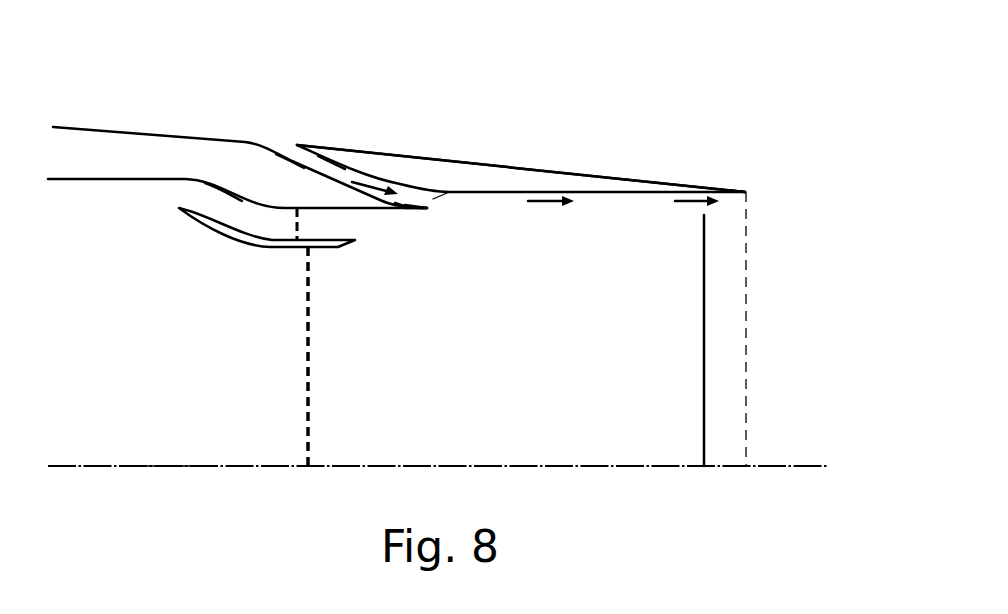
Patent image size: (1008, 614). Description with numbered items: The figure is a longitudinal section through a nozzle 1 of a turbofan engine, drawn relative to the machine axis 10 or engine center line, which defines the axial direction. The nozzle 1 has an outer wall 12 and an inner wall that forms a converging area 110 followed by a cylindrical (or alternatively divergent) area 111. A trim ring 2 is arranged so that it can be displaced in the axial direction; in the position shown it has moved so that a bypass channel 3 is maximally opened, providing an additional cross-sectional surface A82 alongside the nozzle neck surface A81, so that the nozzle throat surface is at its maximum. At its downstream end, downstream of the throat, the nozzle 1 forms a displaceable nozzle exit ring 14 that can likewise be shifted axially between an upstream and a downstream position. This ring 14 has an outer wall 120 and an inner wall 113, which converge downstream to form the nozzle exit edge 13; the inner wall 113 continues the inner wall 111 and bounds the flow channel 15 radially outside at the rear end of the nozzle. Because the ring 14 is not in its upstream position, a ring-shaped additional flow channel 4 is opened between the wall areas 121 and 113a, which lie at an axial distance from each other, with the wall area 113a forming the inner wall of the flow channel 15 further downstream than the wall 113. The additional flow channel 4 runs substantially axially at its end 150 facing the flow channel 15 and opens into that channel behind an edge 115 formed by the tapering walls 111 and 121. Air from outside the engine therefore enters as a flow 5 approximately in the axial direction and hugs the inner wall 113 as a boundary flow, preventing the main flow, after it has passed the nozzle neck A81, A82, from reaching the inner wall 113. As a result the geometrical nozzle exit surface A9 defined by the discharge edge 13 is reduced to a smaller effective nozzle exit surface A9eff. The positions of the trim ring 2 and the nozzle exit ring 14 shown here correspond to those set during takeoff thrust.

The nozzle 1 is at (583, 52).
The trim ring 2 is at (275, 248).
The bypass channel 3 is at (229, 215).
The additional flow channel 4 is at (335, 177).
The flow 5 is at (552, 204).
The machine axis 10 is at (800, 465).
The outer wall 12 is at (97, 126).
The nozzle exit edge 13 is at (745, 191).
The nozzle exit ring 14 is at (392, 170).
The flow channel 15 is at (148, 335).
The converging area 110 is at (227, 190).
The cylindrical area 111 is at (405, 212).
The inner wall 113 is at (633, 196).
The wall area 113a is at (322, 162).
The edge 115 is at (428, 210).
The outer wall 120 is at (478, 164).
The wall area 121 is at (288, 147).
The end of the additional flow channel 150 is at (440, 201).
The nozzle neck A81 is at (309, 355).
The additional cross-sectional surface A82 is at (298, 217).
The geometrical nozzle exit surface A9 is at (747, 268).
The effective nozzle exit surface A9eff is at (705, 312).